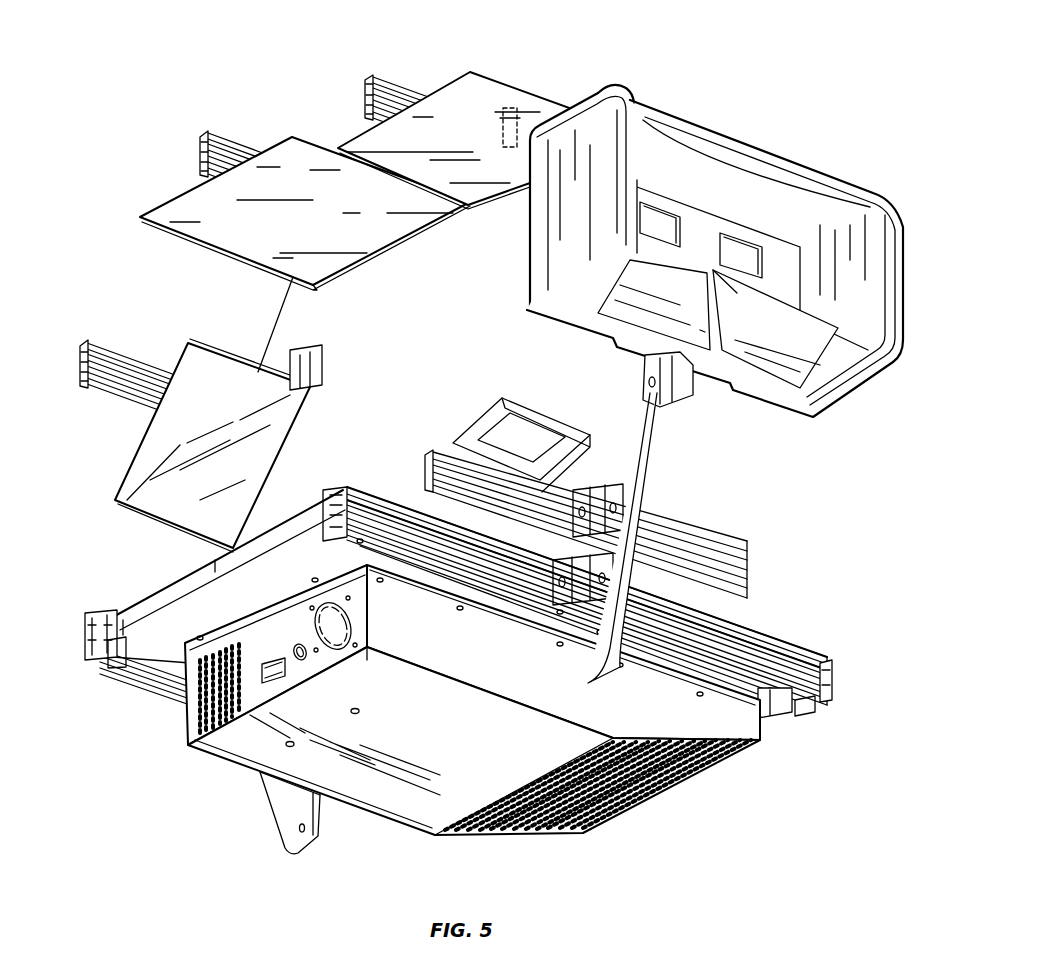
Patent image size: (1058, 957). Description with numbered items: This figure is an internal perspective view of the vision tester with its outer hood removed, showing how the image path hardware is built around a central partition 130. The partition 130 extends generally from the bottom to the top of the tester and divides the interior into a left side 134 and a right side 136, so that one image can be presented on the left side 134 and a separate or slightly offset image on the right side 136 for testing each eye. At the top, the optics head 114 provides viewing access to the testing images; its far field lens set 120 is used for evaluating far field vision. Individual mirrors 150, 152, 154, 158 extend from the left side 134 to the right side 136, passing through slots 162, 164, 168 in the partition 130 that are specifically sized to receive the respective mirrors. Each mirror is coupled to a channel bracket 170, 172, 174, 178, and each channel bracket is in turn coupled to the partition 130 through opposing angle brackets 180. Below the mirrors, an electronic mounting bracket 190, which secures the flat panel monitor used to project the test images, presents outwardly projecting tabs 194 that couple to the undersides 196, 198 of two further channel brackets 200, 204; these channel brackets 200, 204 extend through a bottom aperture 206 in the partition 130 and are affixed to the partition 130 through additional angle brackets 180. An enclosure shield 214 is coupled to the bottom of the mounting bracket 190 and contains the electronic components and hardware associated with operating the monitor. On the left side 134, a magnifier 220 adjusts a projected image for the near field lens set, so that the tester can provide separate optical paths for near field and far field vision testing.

The optics head 114 is at (893, 207).
The far field lens set 120 is at (742, 250).
The partition 130 is at (612, 80).
The left side 134 is at (125, 288).
The right side 136 is at (755, 468).
The mirror 150 is at (478, 70).
The mirror 152 is at (183, 198).
The mirror 154 is at (145, 430).
The mirror 158 is at (738, 537).
The slot 162 is at (300, 330).
The slot 164 is at (225, 548).
The slot 168 is at (654, 452).
The channel bracket 170 is at (396, 75).
The channel bracket 172 is at (247, 138).
The channel bracket 174 is at (95, 344).
The channel bracket 178 is at (748, 583).
The angle bracket 180 is at (522, 90).
The electronic mounting bracket 190 is at (170, 648).
The tab 194 is at (115, 664).
The underside 196 is at (815, 708).
The underside 198 is at (175, 690).
The channel bracket 200 is at (832, 690).
The channel bracket 204 is at (95, 618).
The bottom aperture 206 is at (320, 800).
The enclosure shield 214 is at (410, 795).
The magnifier 220 is at (530, 405).